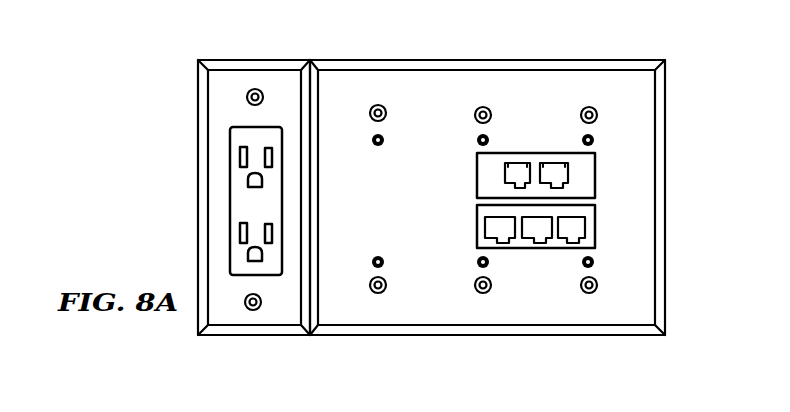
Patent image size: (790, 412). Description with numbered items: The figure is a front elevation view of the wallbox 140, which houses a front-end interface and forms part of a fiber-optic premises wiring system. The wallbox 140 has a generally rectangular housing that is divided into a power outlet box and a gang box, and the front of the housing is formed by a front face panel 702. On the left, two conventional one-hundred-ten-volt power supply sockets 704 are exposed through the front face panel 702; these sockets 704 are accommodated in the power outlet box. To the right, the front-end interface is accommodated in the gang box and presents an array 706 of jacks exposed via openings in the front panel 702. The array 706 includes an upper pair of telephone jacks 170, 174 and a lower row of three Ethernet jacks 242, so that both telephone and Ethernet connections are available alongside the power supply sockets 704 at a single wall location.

The wallbox 140 is at (128, 141).
The front face panel 702 is at (522, 56).
The power supply sockets 704 is at (224, 151).
The array of jacks 706 is at (437, 191).
The telephone jack 170 is at (519, 157).
The telephone jack 174 is at (549, 158).
The Ethernet jacks 242 is at (483, 226).